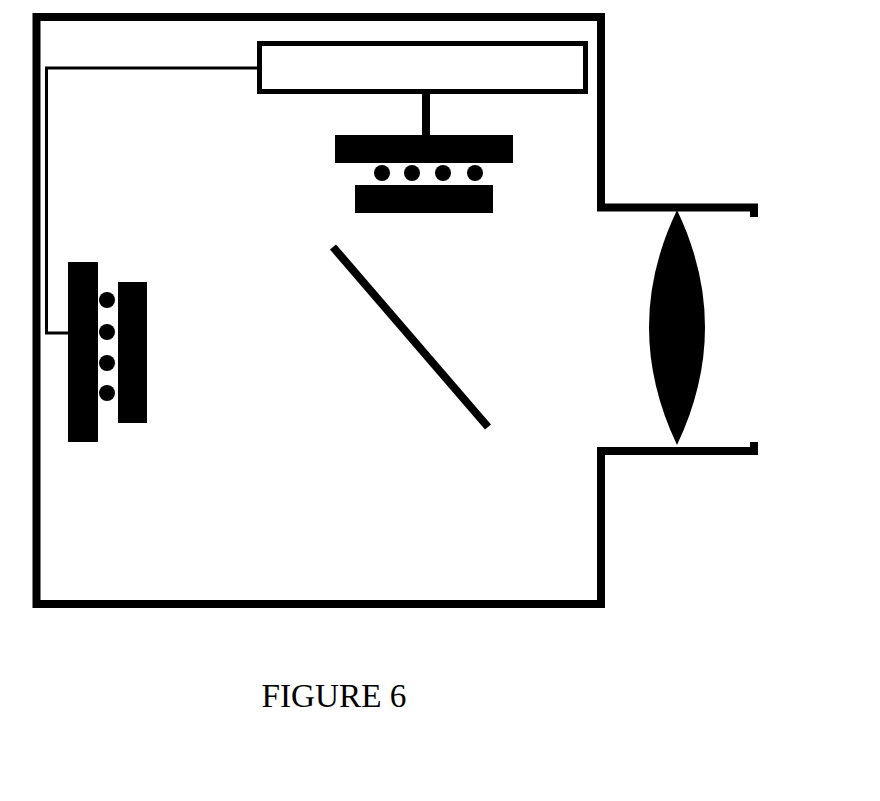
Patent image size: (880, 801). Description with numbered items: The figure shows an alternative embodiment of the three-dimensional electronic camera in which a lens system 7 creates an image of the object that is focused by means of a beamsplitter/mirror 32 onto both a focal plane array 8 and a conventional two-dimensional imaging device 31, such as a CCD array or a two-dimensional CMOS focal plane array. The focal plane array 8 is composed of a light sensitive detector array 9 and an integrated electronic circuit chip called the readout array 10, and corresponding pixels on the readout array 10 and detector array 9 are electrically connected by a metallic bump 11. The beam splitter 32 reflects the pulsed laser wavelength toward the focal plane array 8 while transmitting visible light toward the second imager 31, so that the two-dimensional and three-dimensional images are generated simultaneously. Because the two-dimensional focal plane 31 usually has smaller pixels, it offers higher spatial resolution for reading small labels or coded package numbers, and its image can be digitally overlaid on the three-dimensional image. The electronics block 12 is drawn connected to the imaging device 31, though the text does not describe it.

The lens system 7 is at (648, 285).
The focal plane array 8 is at (535, 120).
The detector array 9 is at (455, 215).
The readout array 10 is at (322, 147).
The metallic bump 11 is at (362, 173).
The power supply 12 is at (258, 90).
The two-dimensional imaging device 31 is at (103, 260).
The beamsplitter/mirror 32 is at (462, 425).